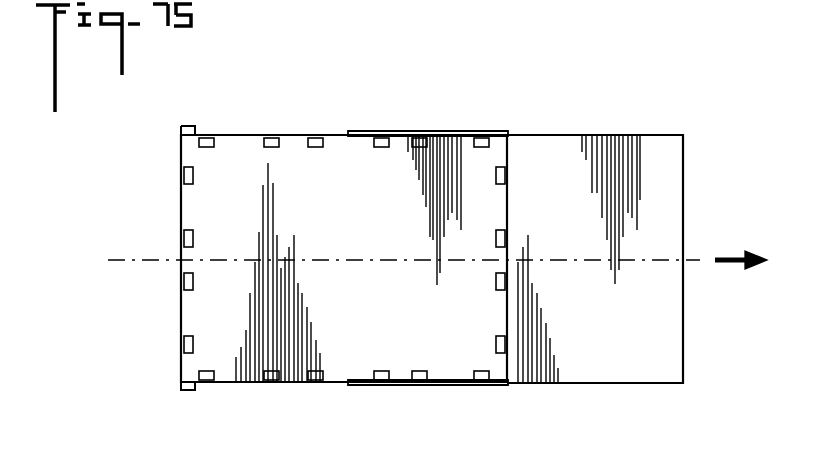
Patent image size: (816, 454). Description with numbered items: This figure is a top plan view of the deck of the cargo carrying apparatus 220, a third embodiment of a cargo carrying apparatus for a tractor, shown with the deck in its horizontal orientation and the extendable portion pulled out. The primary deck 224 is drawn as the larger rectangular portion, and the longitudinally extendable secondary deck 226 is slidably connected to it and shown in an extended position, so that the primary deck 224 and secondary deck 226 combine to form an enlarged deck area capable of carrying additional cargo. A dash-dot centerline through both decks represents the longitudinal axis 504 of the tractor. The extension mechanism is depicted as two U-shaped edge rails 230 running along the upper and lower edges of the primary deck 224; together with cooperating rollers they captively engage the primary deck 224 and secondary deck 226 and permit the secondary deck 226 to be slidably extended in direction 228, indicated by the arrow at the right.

The cargo carrying apparatus 220 is at (498, 85).
The primary deck 224 is at (356, 216).
The longitudinally extendable secondary deck 226 is at (563, 240).
The direction 228 is at (734, 256).
The U-shaped edge rails 230 is at (438, 135).
The longitudinal axis 504 is at (141, 259).